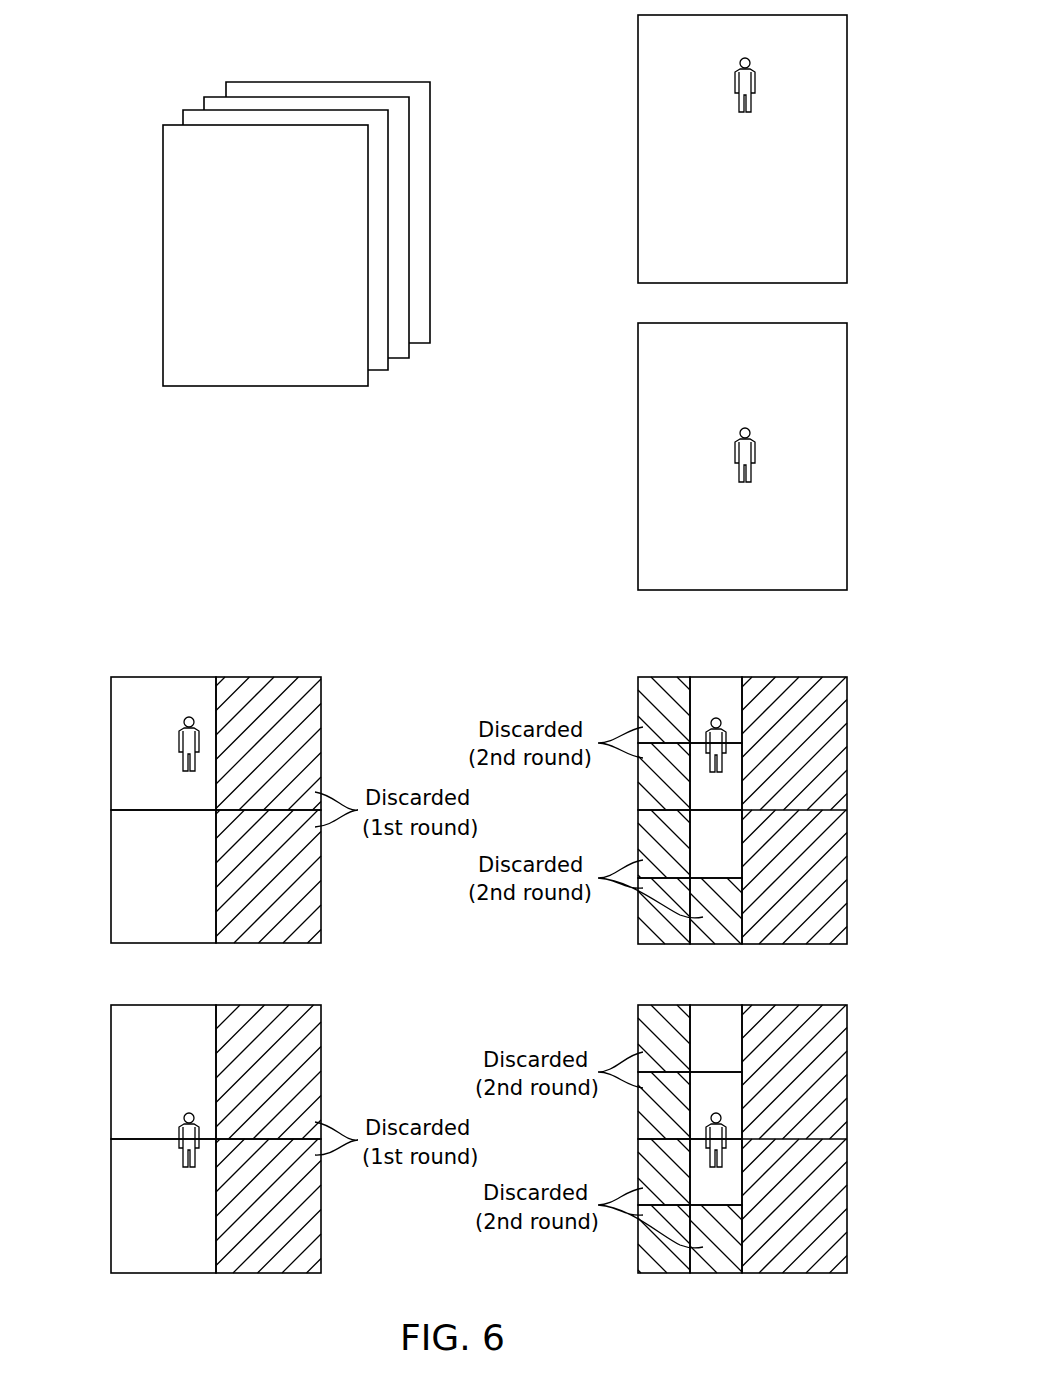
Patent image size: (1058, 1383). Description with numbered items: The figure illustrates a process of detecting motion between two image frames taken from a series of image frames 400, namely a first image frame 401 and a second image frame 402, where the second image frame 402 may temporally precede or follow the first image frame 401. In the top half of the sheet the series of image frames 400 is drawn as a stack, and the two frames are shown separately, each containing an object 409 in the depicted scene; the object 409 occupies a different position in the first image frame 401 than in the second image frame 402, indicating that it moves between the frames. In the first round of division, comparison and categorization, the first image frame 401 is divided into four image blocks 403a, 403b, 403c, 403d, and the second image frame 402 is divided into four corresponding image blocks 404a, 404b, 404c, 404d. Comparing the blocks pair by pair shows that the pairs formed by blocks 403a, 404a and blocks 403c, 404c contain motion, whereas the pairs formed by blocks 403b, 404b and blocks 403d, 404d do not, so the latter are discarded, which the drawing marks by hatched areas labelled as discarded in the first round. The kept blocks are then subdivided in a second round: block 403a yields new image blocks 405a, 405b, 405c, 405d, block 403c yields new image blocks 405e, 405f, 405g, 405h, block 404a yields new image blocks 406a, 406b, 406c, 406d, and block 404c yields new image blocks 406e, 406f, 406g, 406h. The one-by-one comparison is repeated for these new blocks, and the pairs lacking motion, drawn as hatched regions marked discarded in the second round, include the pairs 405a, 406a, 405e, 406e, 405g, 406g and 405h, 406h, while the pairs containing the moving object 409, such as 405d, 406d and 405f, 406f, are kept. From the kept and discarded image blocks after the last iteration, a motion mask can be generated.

The series of image frames 400 is at (165, 85).
The first image frame 401 is at (652, 177).
The second image frame 402 is at (652, 390).
The object 409 is at (735, 80).
The image block 403a is at (124, 743).
The image block 403b is at (268, 690).
The image block 403c is at (124, 876).
The image block 403d is at (315, 902).
The image block 404a is at (124, 1071).
The image block 404b is at (310, 1028).
The image block 404c is at (124, 1205).
The image block 404d is at (310, 1232).
The image block 405a is at (650, 692).
The image block 405b is at (720, 692).
The image block 405c is at (650, 790).
The image block 405d is at (723, 795).
The image block 405e is at (650, 835).
The image block 405f is at (723, 848).
The image block 405g is at (650, 932).
The image block 405h is at (725, 935).
The image block 406a is at (650, 1032).
The image block 406b is at (703, 1015).
The image block 406c is at (650, 1127).
The image block 406d is at (723, 1097).
The image block 406e is at (650, 1168).
The image block 406f is at (723, 1187).
The image block 406g is at (668, 1265).
The image block 406h is at (713, 1263).